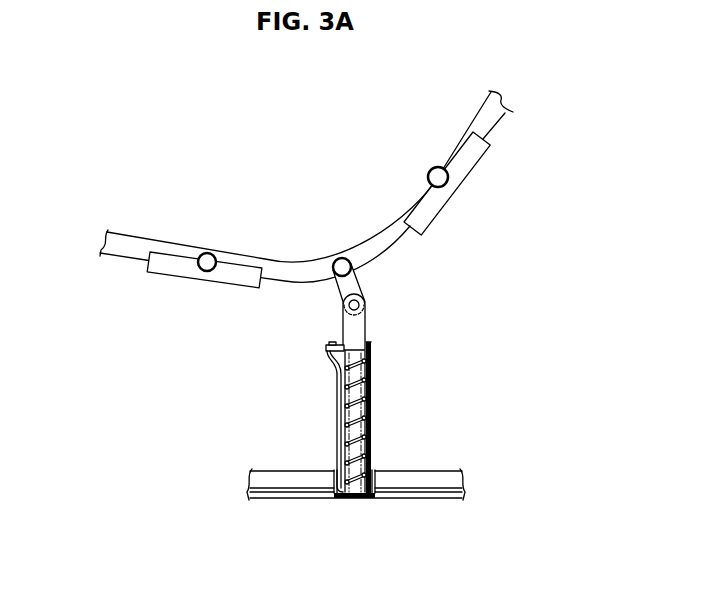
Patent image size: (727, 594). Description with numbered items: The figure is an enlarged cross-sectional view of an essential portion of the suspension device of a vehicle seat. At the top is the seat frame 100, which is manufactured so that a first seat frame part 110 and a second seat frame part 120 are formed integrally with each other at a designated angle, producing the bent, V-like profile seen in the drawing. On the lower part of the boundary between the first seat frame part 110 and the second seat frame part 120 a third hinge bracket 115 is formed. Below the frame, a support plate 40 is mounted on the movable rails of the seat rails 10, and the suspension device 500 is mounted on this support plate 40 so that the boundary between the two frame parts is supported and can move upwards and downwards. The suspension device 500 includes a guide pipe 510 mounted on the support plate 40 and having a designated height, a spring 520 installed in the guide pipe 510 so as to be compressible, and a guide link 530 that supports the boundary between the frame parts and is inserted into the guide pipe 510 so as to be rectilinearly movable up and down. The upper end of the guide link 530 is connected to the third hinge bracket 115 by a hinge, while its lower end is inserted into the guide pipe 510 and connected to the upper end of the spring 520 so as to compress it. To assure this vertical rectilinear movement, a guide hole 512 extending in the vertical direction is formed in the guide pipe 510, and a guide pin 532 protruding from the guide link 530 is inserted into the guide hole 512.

The seat frame 100 is at (374, 84).
The first seat frame part 110 is at (236, 242).
The second seat frame part 120 is at (415, 172).
The third hinge bracket 115 is at (355, 283).
The suspension device 500 is at (303, 356).
The guide link 530 is at (357, 330).
The guide pin 532 is at (331, 354).
The guide pipe 510 is at (365, 380).
The guide hole 512 is at (338, 390).
The spring 520 is at (365, 430).
The support plate 40 is at (334, 494).
The seat rails 10 is at (420, 485).